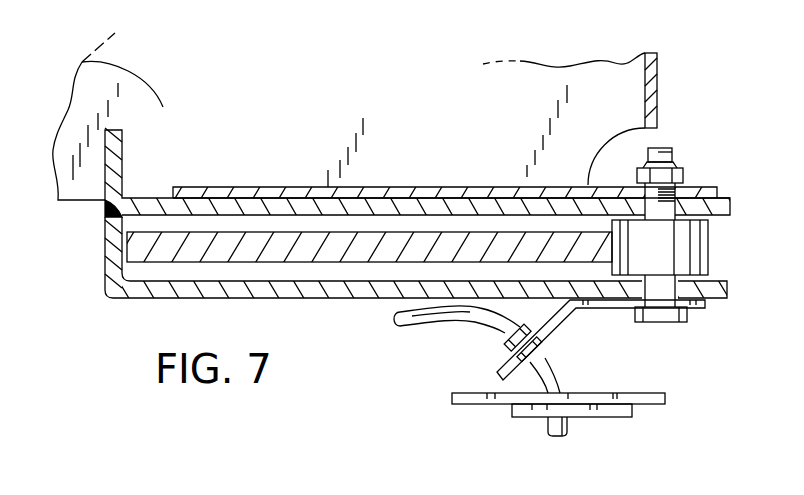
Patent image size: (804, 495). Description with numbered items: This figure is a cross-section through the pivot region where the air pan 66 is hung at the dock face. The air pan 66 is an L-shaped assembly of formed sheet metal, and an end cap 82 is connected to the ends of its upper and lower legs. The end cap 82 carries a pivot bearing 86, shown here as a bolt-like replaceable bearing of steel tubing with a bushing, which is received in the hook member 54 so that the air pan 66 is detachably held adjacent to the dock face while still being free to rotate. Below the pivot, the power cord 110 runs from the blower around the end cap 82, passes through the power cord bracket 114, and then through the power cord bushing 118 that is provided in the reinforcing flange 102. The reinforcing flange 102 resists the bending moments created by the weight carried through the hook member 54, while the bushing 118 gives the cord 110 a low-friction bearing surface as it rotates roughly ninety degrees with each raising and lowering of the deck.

The air pan 66 is at (82, 60).
The end cap 82 is at (185, 298).
The hook member 54 is at (353, 252).
The pivot bearing 86 is at (688, 252).
The power cord bracket 114 is at (558, 310).
The power cord 110 is at (433, 332).
The reinforcing flange 102 is at (643, 393).
The power cord bushing 118 is at (622, 418).